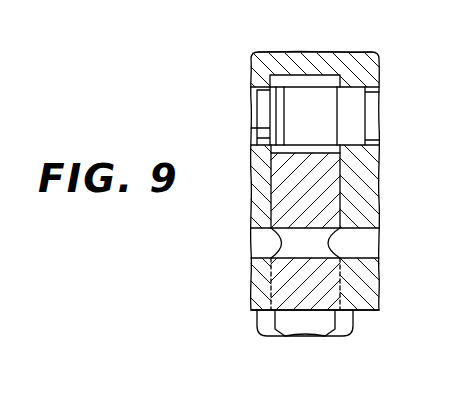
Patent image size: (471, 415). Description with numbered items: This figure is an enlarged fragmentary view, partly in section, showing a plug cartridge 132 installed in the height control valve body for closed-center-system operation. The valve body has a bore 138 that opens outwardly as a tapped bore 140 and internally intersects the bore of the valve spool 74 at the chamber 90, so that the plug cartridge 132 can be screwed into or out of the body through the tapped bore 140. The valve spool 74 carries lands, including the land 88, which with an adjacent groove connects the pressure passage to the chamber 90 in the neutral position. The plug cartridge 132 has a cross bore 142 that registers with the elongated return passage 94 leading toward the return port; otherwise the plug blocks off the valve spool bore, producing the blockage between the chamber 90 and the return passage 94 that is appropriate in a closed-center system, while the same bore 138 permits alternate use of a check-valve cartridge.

The valve spool 74 is at (374, 98).
The land 88 is at (262, 128).
The chamber 90 is at (313, 80).
The return passage 94 is at (376, 247).
The plug cartridge 132 is at (332, 202).
The bore 138 is at (340, 177).
The tapped bore 140 is at (340, 291).
The cross bore 142 is at (286, 240).